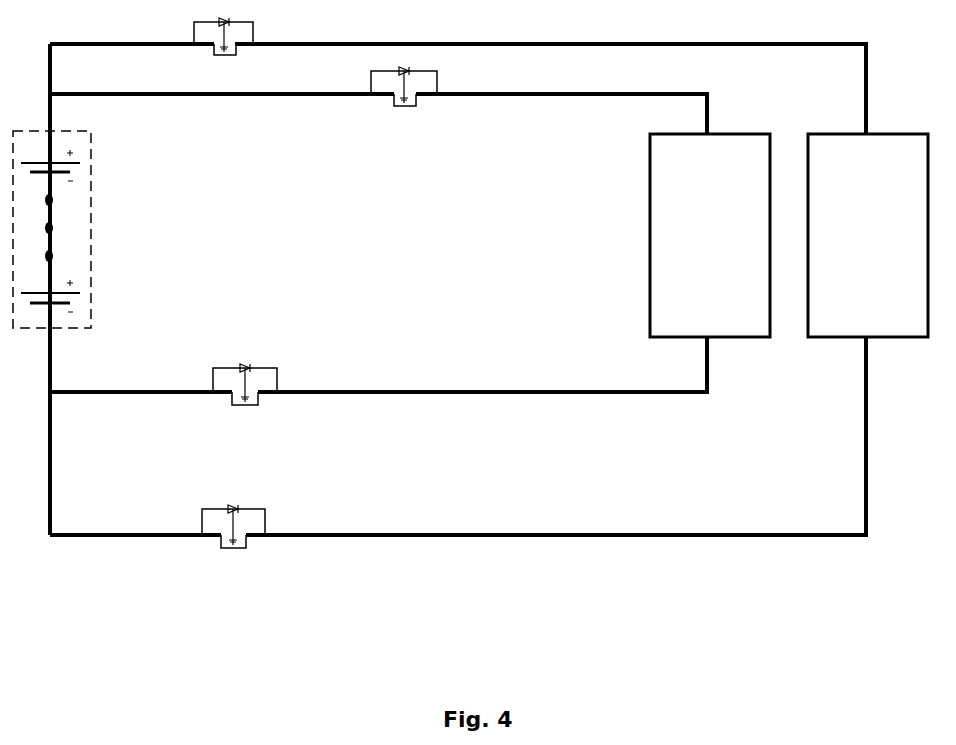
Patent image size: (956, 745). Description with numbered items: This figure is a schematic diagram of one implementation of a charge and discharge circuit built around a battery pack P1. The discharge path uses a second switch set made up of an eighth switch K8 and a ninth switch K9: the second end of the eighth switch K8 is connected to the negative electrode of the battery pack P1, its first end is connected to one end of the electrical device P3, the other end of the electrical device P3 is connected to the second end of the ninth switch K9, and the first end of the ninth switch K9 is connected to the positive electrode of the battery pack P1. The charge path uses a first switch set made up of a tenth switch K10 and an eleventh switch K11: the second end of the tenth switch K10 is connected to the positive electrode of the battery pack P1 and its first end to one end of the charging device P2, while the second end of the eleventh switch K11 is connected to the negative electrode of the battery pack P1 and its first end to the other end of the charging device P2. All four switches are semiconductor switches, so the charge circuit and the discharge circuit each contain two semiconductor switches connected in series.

The eighth switch K8 is at (239, 407).
The ninth switch K9 is at (414, 108).
The tenth switch K10 is at (218, 57).
The eleventh switch K11 is at (227, 549).
The battery pack P1 is at (91, 187).
The charging device P2 is at (868, 235).
The electrical device P3 is at (710, 235).